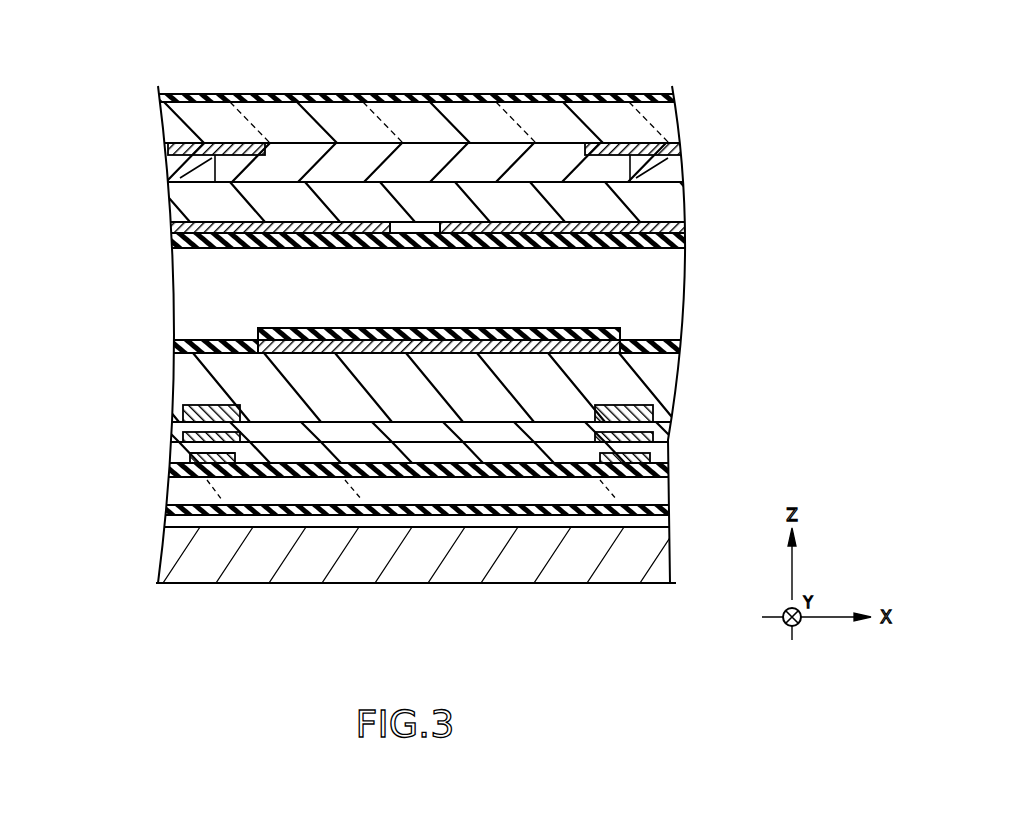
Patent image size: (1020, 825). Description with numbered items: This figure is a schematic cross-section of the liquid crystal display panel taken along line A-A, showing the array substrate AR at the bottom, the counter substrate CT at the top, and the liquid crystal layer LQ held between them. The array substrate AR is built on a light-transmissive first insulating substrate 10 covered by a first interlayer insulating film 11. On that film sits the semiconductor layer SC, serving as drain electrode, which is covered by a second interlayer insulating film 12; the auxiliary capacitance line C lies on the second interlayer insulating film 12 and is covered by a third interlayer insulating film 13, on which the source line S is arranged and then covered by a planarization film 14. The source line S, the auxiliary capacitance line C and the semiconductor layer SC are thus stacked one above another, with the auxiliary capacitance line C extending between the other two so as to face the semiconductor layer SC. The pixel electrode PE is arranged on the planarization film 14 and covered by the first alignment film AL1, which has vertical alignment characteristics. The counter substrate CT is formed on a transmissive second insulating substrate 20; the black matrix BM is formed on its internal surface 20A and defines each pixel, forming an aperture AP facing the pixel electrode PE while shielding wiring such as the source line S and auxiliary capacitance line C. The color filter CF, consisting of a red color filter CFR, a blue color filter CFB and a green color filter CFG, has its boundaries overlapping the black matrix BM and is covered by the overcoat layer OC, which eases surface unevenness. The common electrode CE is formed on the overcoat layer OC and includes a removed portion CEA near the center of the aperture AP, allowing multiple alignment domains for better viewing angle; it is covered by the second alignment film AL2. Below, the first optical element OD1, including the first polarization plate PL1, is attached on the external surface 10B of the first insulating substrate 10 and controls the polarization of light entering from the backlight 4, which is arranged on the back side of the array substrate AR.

The line A- A is at (412, 78).
The second insulating substrate 20 is at (665, 121).
The internal surface of the second insulating substrate 20A is at (526, 143).
The color filter CF is at (713, 147).
The red color filter CFR is at (408, 143).
The blue color filter CFB is at (193, 157).
The green color filter CFG is at (678, 167).
The black matrix BM is at (222, 143).
The overcoat layer OC is at (678, 202).
The common electrode CE is at (678, 228).
The removed portion CEA is at (405, 240).
The second alignment film AL2 is at (172, 241).
The liquid crystal layer LQ is at (682, 292).
The first alignment film AL1 is at (167, 346).
The pixel electrode PE is at (563, 340).
The planarization film 14 is at (668, 372).
The source line S is at (170, 415).
The third interlayer insulating film 13 is at (665, 426).
The auxiliary capacitance line C is at (180, 437).
The second interlayer insulating film 12 is at (668, 453).
The first interlayer insulating film 11 is at (670, 473).
The first insulating substrate 10 is at (668, 494).
The external surface of the first insulating substrate 10B is at (360, 512).
The first optical element OD1 is at (420, 516).
The first polarization plate PL1 is at (478, 515).
The backlight 4 is at (657, 585).
The semiconductor layer SC is at (205, 465).
The aperture AP is at (587, 145).
The counter substrate CT is at (151, 184).
The array substrate AR is at (131, 543).